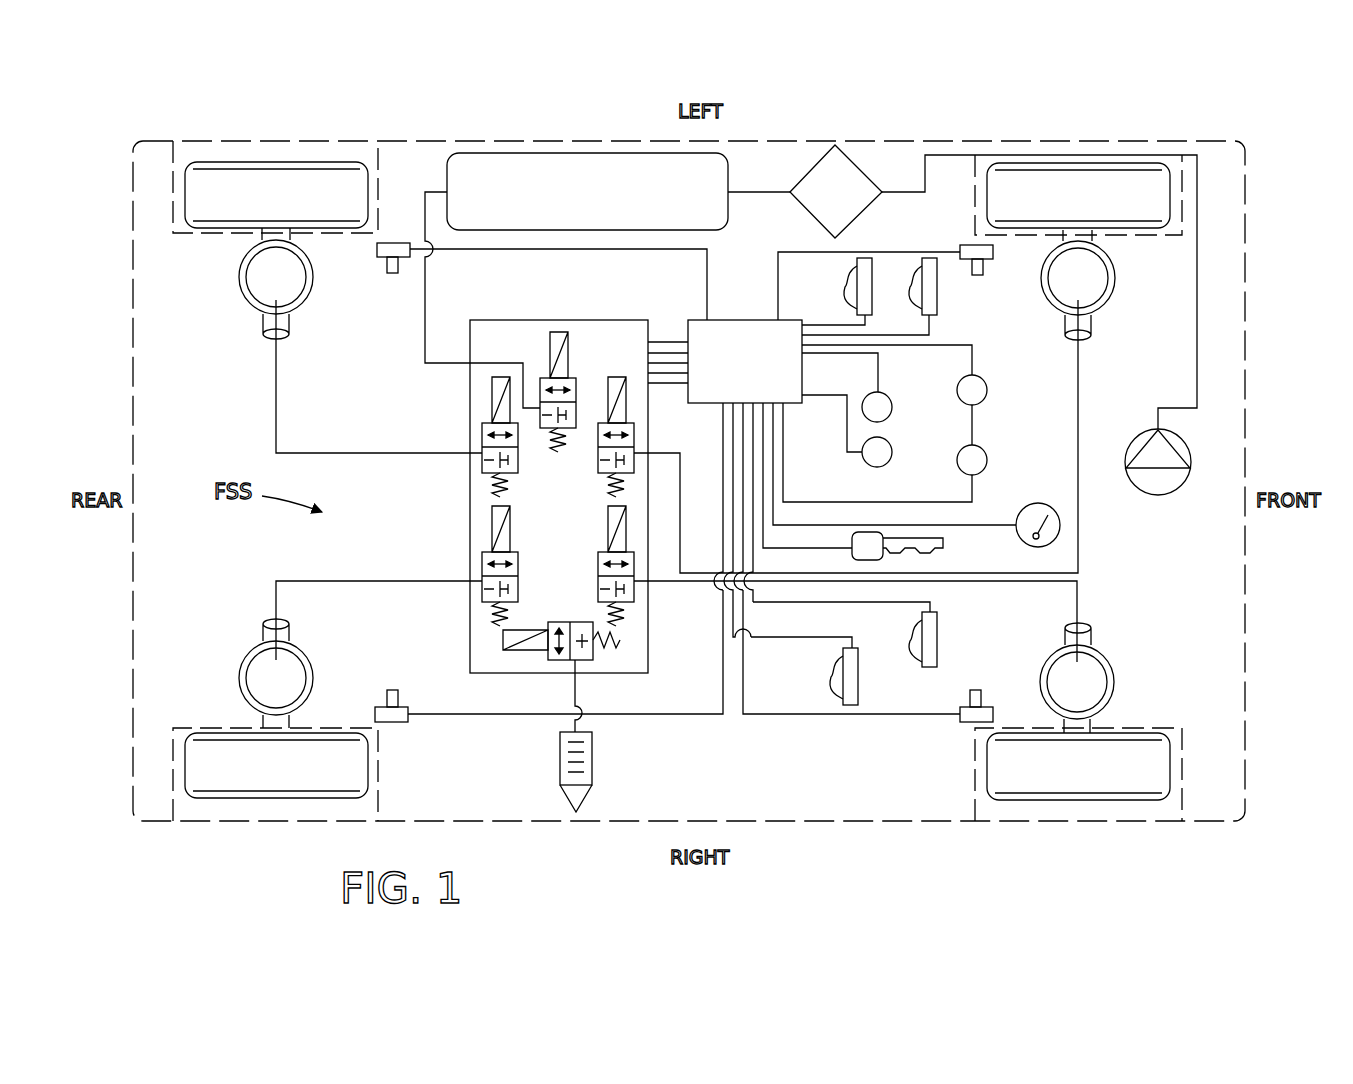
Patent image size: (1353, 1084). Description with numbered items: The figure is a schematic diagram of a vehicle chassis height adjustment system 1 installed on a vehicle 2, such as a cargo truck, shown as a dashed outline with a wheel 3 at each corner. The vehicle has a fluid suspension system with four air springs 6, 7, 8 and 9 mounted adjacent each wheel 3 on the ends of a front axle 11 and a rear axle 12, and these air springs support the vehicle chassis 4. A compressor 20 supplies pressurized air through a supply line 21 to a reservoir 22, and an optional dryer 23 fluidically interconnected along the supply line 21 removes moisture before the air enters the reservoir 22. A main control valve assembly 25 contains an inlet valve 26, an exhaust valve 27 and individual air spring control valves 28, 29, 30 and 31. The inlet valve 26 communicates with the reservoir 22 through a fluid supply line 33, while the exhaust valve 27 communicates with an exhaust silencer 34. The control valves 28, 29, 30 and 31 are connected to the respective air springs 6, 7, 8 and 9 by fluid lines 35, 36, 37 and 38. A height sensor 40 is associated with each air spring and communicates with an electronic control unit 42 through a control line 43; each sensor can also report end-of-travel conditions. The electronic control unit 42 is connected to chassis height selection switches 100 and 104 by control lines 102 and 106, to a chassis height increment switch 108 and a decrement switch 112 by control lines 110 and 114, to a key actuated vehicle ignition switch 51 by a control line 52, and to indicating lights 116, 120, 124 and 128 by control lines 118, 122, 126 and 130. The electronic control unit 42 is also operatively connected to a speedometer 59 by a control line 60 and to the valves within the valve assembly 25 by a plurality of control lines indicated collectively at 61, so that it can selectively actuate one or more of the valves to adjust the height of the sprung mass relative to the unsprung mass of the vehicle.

The vehicle chassis height adjustment system 1 is at (765, 158).
The vehicle 2 is at (1113, 103).
The wheels 3 is at (245, 175).
The vehicle chassis 4 is at (432, 137).
The air spring 6 is at (255, 276).
The air spring 7 is at (1115, 283).
The air spring 8 is at (255, 679).
The air spring 9 is at (1100, 684).
The front axle 11 is at (1092, 633).
The rear axle 12 is at (262, 329).
The compressor 20 is at (1145, 490).
The supply line 21 is at (1196, 345).
The reservoir 22 is at (720, 233).
The dryer 23 is at (870, 172).
The main control valve assembly 25 is at (463, 632).
The inlet valve 26 is at (547, 343).
The exhaust valve 27 is at (575, 622).
The air spring control valve 28 is at (490, 398).
The air spring control valve 29 is at (627, 403).
The air spring control valve 30 is at (490, 522).
The air spring control valve 31 is at (606, 523).
The fluid supply line 33 is at (423, 337).
The exhaust silencer 34 is at (560, 775).
The fluid line 35 is at (275, 386).
The fluid line 36 is at (1082, 382).
The fluid line 37 is at (330, 580).
The fluid line 38 is at (1018, 586).
The height sensor 40 is at (395, 243).
The electronic control unit 42 is at (718, 320).
The control line 43 is at (510, 253).
The key actuated vehicle ignition switch 51 is at (870, 535).
The control line 52 is at (800, 540).
The speedometer 59 is at (1032, 505).
The control line 60 is at (975, 528).
The control lines 61 is at (668, 323).
The chassis height selection switch 100 is at (853, 288).
The control line 102 is at (860, 328).
The chassis height selection switch 104 is at (940, 285).
The control line 106 is at (895, 342).
The chassis height increment switch 108 is at (860, 678).
The control line 110 is at (815, 640).
The chassis height decrement switch 112 is at (942, 640).
The control line 114 is at (835, 602).
The indicating light 116 is at (893, 405).
The control line 118 is at (825, 355).
The indicating light 120 is at (988, 390).
The control line 122 is at (975, 345).
The indicating light 124 is at (893, 450).
The control line 126 is at (845, 445).
The indicating light 128 is at (988, 458).
The control line 130 is at (905, 500).